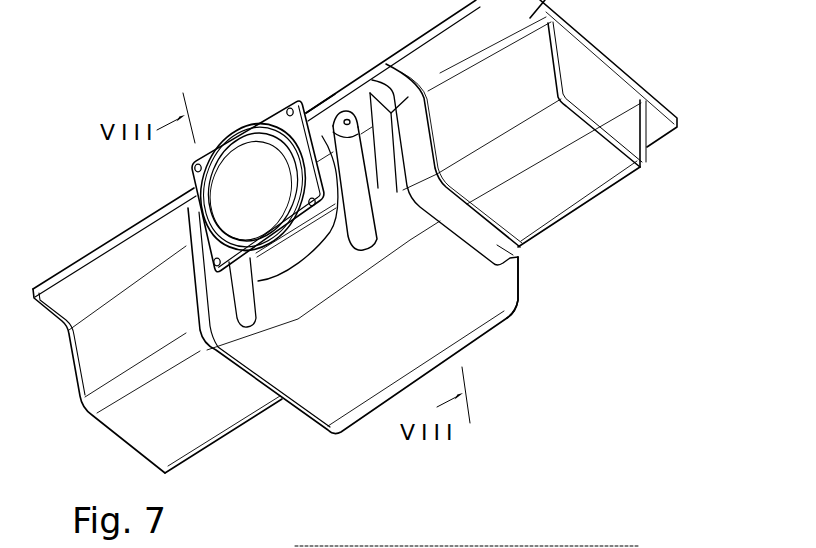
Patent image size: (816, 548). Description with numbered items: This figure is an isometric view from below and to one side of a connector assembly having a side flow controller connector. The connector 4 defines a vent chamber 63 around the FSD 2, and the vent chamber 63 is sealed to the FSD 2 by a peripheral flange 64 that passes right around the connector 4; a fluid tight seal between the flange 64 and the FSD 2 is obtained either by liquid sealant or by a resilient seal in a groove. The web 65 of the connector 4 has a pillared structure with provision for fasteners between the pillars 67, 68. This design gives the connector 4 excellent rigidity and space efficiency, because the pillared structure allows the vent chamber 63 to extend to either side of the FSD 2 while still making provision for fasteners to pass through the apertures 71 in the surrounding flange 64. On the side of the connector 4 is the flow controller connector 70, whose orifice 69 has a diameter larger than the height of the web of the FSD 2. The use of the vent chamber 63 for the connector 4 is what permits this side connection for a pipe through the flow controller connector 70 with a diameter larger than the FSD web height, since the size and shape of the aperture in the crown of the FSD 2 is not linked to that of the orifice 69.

The FSD 2 is at (612, 191).
The connector 4 is at (322, 408).
The vent chamber 63 is at (507, 327).
The peripheral flange 64 is at (518, 255).
The web 65 is at (348, 117).
The pillar 67 is at (306, 101).
The pillar 68 is at (382, 188).
The orifice 69 is at (247, 188).
The flow controller connector 70 is at (250, 253).
The aperture 71 is at (331, 122).